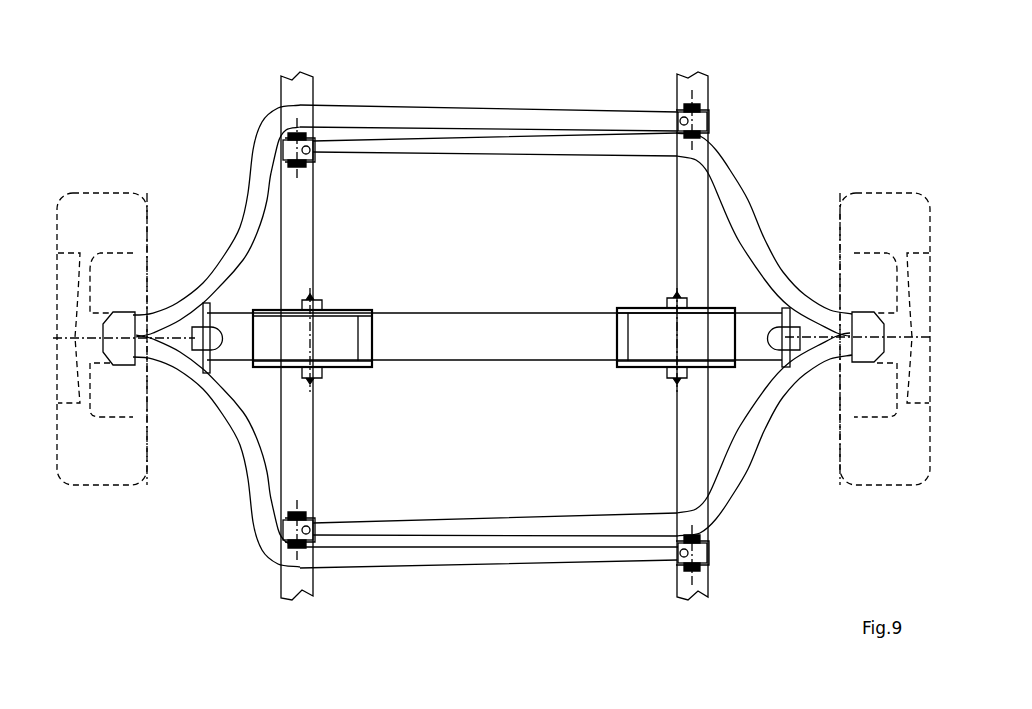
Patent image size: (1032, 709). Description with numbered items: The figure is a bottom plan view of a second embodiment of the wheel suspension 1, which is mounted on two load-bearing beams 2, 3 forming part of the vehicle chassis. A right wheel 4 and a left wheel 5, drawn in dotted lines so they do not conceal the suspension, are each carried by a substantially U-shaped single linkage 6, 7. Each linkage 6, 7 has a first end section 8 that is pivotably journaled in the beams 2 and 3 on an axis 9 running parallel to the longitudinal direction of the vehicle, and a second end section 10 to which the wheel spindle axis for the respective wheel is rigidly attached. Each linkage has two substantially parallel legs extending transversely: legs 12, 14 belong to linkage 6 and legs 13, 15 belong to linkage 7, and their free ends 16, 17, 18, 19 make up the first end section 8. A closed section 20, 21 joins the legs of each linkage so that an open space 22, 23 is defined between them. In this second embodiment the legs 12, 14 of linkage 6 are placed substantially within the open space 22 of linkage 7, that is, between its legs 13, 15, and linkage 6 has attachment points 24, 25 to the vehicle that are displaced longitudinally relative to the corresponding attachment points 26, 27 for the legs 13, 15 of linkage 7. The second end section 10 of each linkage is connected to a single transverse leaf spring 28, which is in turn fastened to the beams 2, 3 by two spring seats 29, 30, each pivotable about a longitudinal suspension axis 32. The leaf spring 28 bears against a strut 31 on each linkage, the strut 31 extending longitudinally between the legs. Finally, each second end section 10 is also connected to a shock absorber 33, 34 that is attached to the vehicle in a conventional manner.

The wheel suspension 1 is at (258, 80).
The load-bearing beam 2 is at (700, 74).
The load-bearing beam 3 is at (303, 85).
The right wheel 4 is at (890, 194).
The left wheel 5 is at (112, 196).
The linkage 6 is at (733, 175).
The linkage 7 is at (258, 166).
The first end section 8 is at (308, 150).
The axis 9 is at (302, 120).
The second end section 10 is at (160, 286).
The leg 12 is at (506, 154).
The leg 13 is at (494, 106).
The leg 14 is at (505, 524).
The leg 15 is at (513, 568).
The free end 16 is at (318, 160).
The free end 17 is at (318, 522).
The free end 18 is at (676, 110).
The free end 19 is at (676, 558).
The closed section 20 is at (224, 432).
The closed section 21 is at (762, 440).
The open space 22 is at (449, 428).
The open space 23 is at (531, 428).
The attachment point 24 is at (265, 132).
The attachment point 25 is at (276, 545).
The attachment point 26 is at (705, 133).
The attachment point 27 is at (705, 549).
The leaf spring 28 is at (500, 322).
The spring seat 29 is at (366, 309).
The spring seat 30 is at (628, 312).
The strut 31 is at (205, 372).
The suspension axis 32 is at (333, 351).
The shock absorber 33 is at (214, 330).
The shock absorber 34 is at (776, 335).